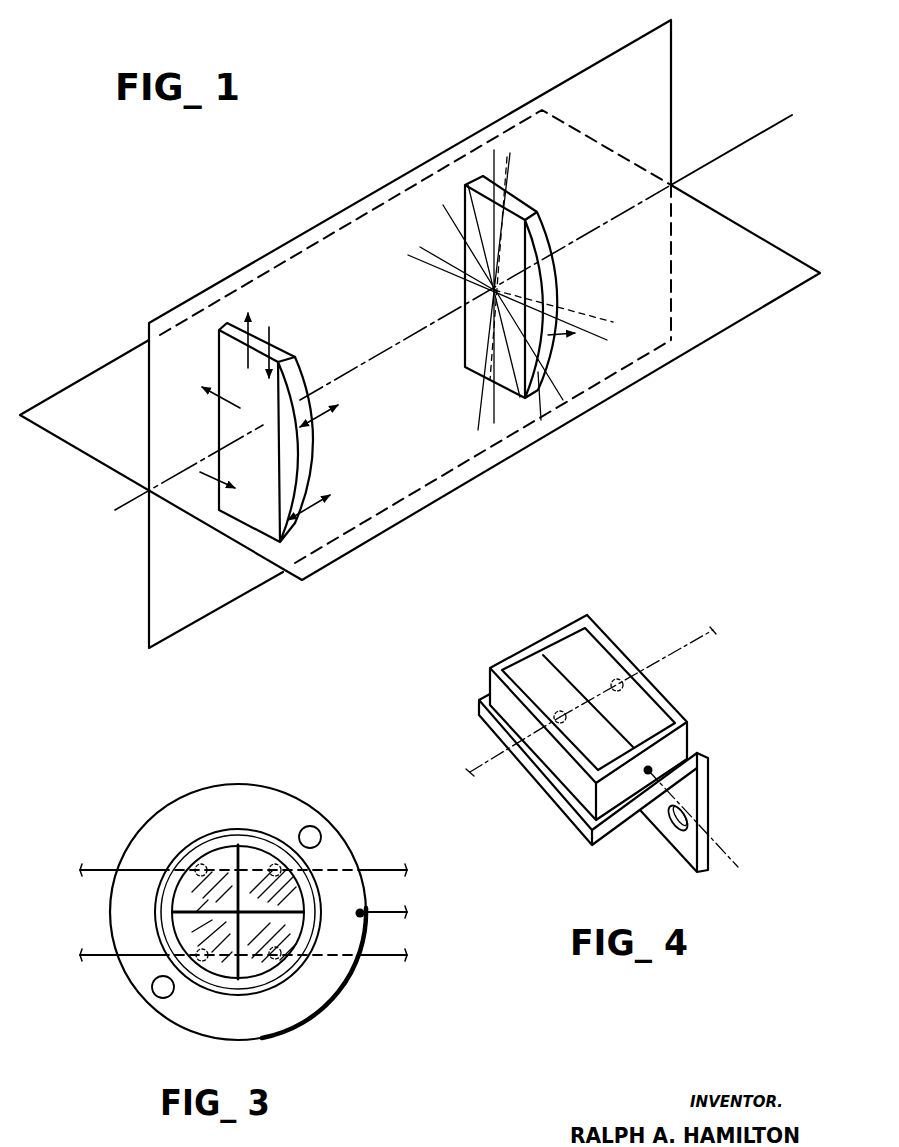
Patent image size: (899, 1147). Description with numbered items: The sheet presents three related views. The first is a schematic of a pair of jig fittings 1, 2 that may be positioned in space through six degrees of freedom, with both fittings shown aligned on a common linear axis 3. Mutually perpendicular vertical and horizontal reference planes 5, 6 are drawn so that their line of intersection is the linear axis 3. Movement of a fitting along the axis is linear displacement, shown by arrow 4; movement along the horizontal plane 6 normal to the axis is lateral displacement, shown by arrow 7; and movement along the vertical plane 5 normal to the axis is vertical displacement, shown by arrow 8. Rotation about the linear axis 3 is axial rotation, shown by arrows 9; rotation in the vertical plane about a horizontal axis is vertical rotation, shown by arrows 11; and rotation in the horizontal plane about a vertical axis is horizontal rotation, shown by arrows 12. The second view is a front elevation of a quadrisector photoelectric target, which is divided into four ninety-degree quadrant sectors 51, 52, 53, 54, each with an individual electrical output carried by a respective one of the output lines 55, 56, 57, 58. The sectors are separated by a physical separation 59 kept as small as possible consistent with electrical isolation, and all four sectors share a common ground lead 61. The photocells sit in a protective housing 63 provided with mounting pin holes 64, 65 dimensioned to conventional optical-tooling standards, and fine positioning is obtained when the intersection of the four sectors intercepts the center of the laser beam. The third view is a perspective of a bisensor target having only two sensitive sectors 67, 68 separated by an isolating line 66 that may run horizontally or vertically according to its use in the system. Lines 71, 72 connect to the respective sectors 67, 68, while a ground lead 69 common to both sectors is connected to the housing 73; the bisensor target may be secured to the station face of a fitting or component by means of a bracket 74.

In FIG. 1, the jig fitting 1 is at (297, 378).
In FIG. 1, the jig fitting 2 is at (537, 224).
In FIG. 1, the linear axis 3 is at (717, 157).
In FIG. 1, the linear displacement arrow 4 is at (332, 405).
In FIG. 1, the vertical reference plane 5 is at (636, 93).
In FIG. 1, the horizontal reference plane 6 is at (716, 316).
In FIG. 1, the lateral displacement arrow 7 is at (135, 545).
In FIG. 1, the vertical displacement arrow 8 is at (173, 268).
In FIG. 1, the axial rotation arrows 9 is at (563, 433).
In FIG. 1, the vertical rotation arrows 11 is at (546, 150).
In FIG. 1, the horizontal rotation arrows 12 is at (593, 356).
In FIG. 3, the quadrant sector 51 is at (255, 863).
In FIG. 3, the quadrant sector 52 is at (258, 962).
In FIG. 3, the quadrant sector 53 is at (230, 960).
In FIG. 3, the quadrant sector 54 is at (220, 862).
In FIG. 3, the output line 55 is at (396, 869).
In FIG. 3, the output line 56 is at (391, 957).
In FIG. 3, the output line 57 is at (100, 957).
In FIG. 3, the output line 58 is at (100, 872).
In FIG. 3, the physical separation 59 is at (242, 873).
In FIG. 3, the common ground lead 61 is at (392, 912).
In FIG. 3, the protective housing 63 is at (277, 1027).
In FIG. 3, the mounting pin hole 64 is at (318, 832).
In FIG. 3, the mounting pin hole 65 is at (158, 993).
In FIG. 4, the isolating line 66 is at (563, 668).
In FIG. 4, the sector 67 is at (530, 666).
In FIG. 4, the sector 68 is at (588, 652).
In FIG. 4, the ground lead 69 is at (722, 846).
In FIG. 4, the output line 71 is at (475, 770).
In FIG. 4, the output line 72 is at (695, 652).
In FIG. 4, the housing 73 is at (670, 748).
In FIG. 4, the bracket 74 is at (660, 823).